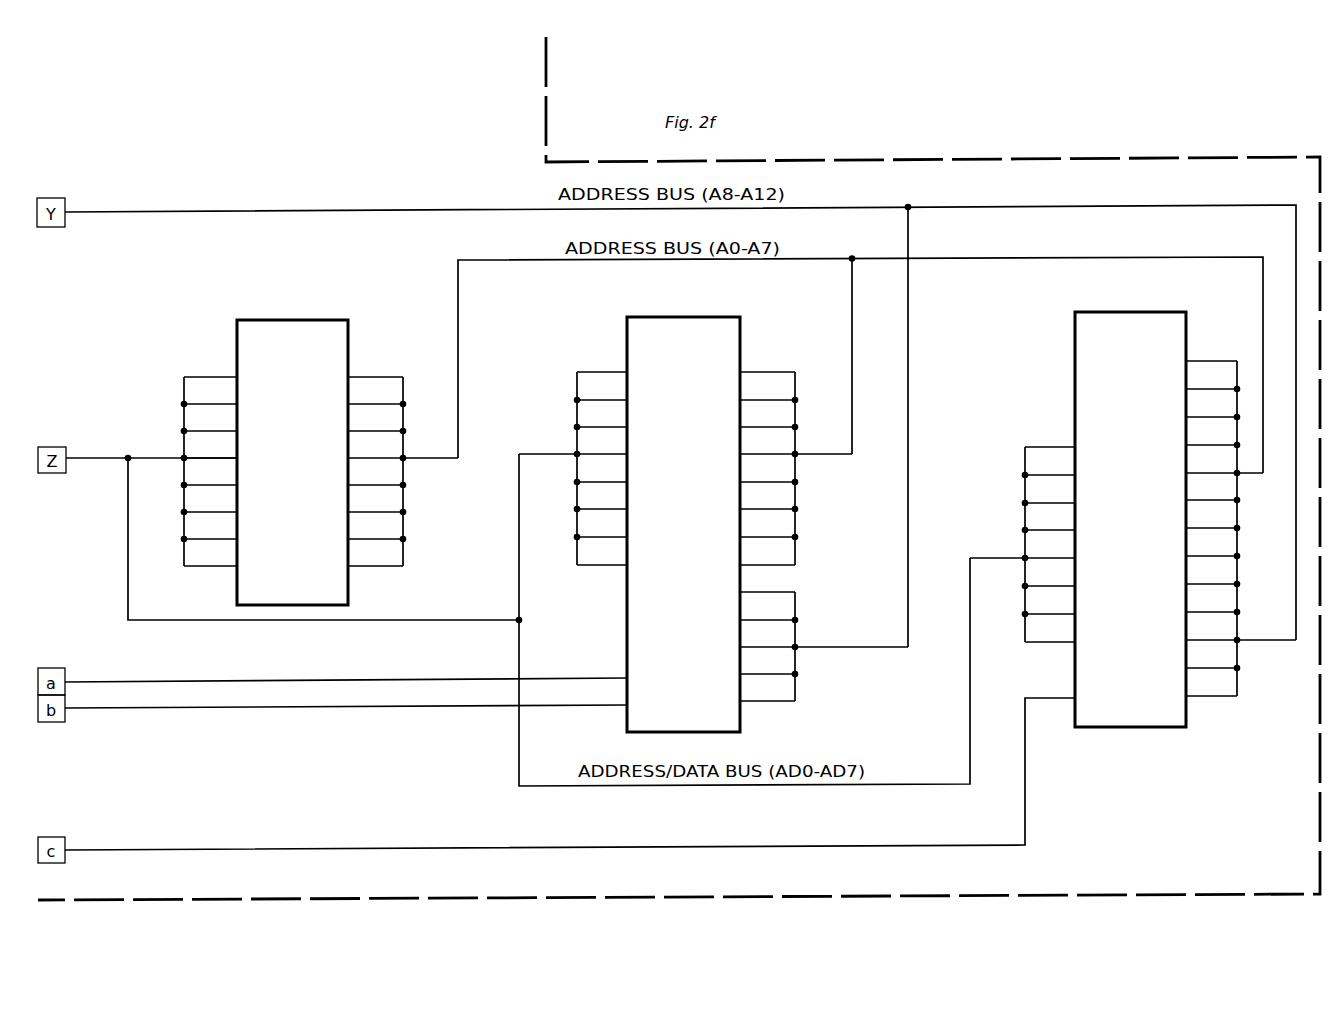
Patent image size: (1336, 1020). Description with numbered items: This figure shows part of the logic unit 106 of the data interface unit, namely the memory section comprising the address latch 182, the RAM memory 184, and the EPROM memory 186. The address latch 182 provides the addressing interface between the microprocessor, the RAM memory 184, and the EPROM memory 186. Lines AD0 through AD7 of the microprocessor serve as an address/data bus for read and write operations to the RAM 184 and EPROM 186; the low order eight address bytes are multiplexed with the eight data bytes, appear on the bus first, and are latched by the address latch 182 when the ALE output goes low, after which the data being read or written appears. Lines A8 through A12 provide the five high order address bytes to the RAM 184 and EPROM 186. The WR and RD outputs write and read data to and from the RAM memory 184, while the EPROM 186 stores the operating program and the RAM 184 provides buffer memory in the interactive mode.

The logic unit 106 is at (1005, 136).
The address latch 182 is at (237, 600).
The RAM memory 184 is at (627, 329).
The EPROM memory 186 is at (1075, 352).